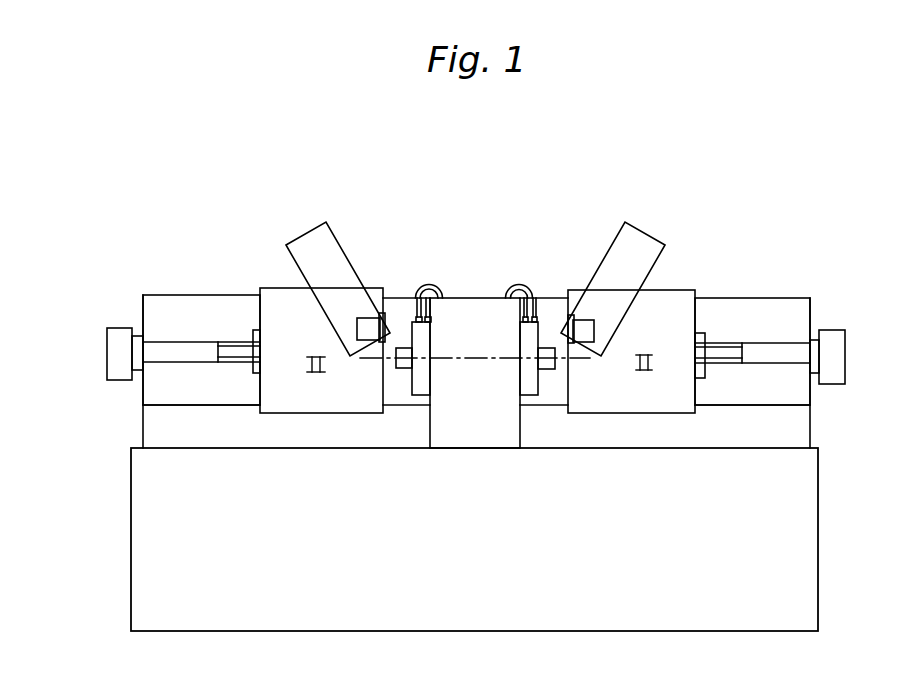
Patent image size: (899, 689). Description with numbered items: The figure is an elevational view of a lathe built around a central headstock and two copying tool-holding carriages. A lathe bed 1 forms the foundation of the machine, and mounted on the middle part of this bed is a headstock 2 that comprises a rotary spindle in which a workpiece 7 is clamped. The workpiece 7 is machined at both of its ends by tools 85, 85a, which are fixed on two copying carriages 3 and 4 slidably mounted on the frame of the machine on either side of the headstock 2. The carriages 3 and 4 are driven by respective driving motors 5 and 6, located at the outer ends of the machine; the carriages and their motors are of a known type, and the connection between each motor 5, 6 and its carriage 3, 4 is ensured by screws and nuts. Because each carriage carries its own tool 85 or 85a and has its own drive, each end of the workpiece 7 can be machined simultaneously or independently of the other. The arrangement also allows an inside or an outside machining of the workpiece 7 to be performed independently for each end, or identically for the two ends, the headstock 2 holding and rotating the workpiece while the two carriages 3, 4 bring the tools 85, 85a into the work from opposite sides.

The lathe bed 1 is at (150, 514).
The headstock 2 is at (492, 310).
The copying carriage 3 is at (305, 243).
The copying carriage 4 is at (648, 243).
The driving motor 5 is at (115, 330).
The driving motor 6 is at (835, 340).
The workpiece 7 is at (403, 353).
The tool 85 is at (386, 340).
The tool 85a is at (565, 342).